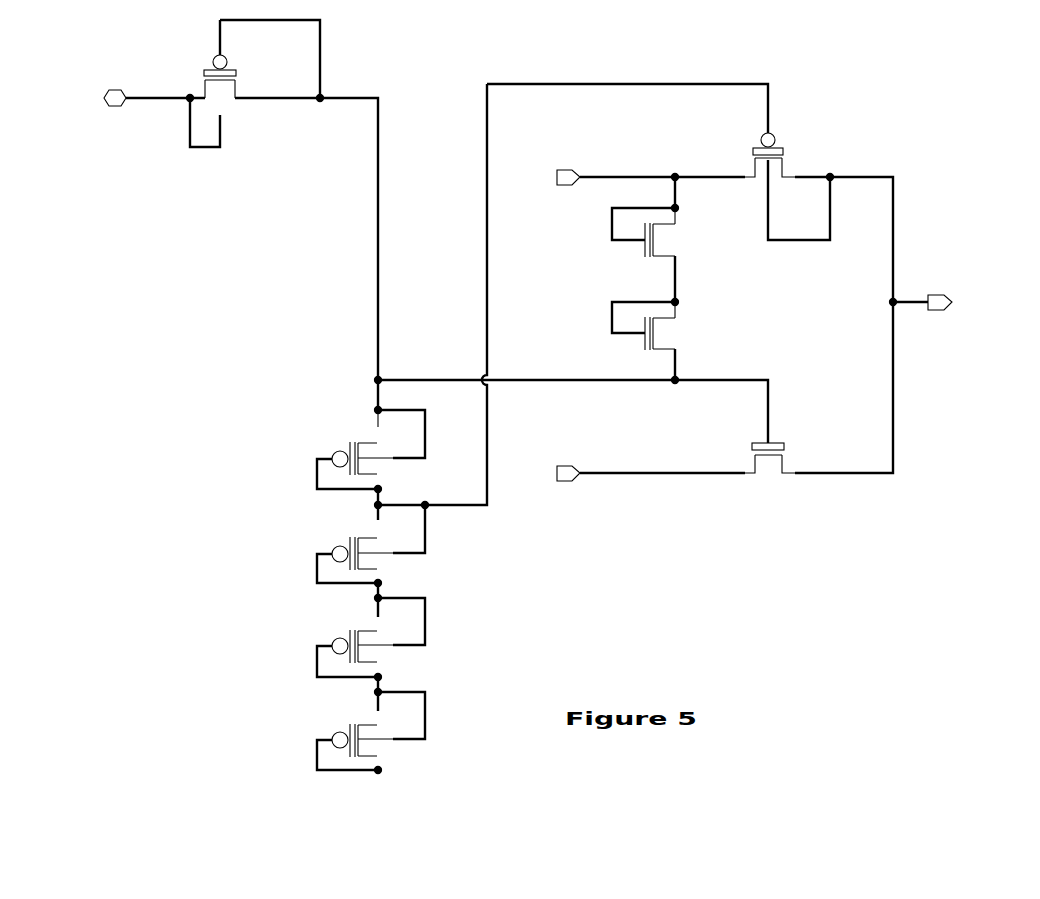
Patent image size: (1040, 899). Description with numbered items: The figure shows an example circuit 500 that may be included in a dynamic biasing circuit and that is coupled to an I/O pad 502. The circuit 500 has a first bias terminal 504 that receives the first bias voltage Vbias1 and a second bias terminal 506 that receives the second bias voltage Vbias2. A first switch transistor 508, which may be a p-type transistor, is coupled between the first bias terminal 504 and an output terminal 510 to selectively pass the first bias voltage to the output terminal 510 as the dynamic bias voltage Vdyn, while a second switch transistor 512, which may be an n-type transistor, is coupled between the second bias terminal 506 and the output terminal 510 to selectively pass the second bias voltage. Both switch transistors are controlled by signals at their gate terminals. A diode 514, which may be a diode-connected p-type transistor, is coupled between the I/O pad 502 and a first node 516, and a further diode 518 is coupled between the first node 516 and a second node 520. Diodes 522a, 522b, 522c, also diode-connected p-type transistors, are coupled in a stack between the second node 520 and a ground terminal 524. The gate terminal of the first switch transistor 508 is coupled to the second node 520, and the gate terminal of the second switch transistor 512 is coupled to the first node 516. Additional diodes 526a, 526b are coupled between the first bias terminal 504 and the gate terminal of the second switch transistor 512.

The circuit 500 is at (531, 443).
The I/O pad 502 is at (114, 92).
The first bias terminal 504 is at (566, 188).
The second bias terminal 506 is at (569, 483).
The first switch transistor 508 is at (774, 165).
The output terminal 510 is at (941, 312).
The second switch transistor 512 is at (798, 490).
The diode 514 is at (170, 56).
The first node 516 is at (373, 375).
The diode 518 is at (346, 440).
The second node 520 is at (428, 508).
The diode 522a is at (329, 544).
The diode 522b is at (329, 637).
The diode 522c is at (329, 730).
The ground terminal 524 is at (377, 827).
The diode 526a is at (702, 336).
The diode 526b is at (602, 240).